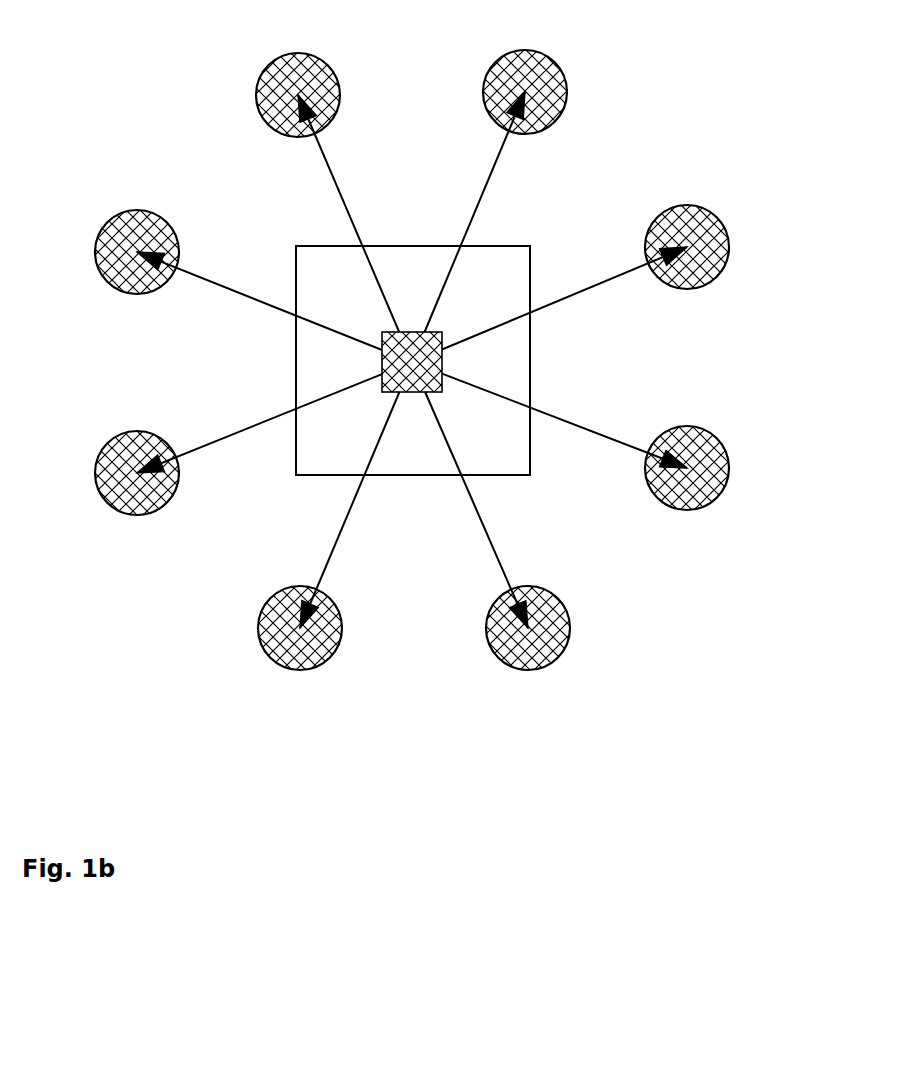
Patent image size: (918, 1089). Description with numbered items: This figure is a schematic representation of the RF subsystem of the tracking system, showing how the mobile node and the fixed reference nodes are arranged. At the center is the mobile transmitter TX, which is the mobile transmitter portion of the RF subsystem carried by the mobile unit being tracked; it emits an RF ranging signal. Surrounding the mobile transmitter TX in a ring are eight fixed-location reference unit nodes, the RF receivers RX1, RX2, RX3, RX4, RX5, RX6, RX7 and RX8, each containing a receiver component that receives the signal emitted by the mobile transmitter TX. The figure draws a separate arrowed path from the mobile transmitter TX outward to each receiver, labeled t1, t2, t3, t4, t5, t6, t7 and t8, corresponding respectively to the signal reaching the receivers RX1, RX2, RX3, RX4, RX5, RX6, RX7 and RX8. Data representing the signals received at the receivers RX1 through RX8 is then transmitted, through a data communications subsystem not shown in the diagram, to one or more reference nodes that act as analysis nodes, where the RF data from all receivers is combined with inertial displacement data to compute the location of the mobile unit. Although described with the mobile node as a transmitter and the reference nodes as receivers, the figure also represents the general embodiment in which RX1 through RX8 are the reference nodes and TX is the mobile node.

The mobile transmitter TX is at (433, 392).
The RF receiver RX1 is at (551, 92).
The RF receiver RX2 is at (716, 247).
The RF receiver RX3 is at (713, 471).
The RF receiver RX4 is at (538, 646).
The RF receiver RX5 is at (293, 646).
The RF receiver RX6 is at (113, 473).
The RF receiver RX7 is at (111, 252).
The RF receiver RX8 is at (293, 72).
The transmission path 1 t1 is at (485, 212).
The transmission path 2 t2 is at (564, 298).
The transmission path 3 t3 is at (564, 429).
The transmission path 4 t4 is at (476, 510).
The transmission path 5 t5 is at (349, 510).
The transmission path 6 t6 is at (259, 423).
The transmission path 7 t7 is at (259, 290).
The transmission path 8 t8 is at (348, 213).